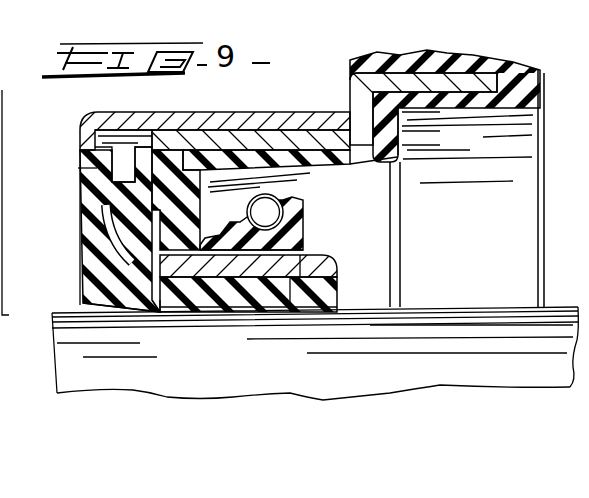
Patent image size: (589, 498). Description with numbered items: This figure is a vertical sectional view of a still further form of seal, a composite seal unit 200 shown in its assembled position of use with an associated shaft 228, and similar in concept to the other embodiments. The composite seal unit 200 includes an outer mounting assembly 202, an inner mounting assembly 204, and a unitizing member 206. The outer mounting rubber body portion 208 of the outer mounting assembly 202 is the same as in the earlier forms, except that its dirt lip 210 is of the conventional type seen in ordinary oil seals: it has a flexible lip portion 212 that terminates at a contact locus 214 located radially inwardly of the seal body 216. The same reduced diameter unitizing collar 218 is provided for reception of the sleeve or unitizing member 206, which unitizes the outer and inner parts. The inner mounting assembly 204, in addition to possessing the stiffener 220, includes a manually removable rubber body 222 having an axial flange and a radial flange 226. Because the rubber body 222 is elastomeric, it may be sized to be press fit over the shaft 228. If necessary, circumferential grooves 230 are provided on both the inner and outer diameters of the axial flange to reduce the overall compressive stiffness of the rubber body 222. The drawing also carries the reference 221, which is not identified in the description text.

The composite seal unit 200 is at (308, 100).
The outer mounting assembly 202 is at (478, 50).
The inner mounting assembly 204 is at (380, 265).
The unitizing member 206 is at (118, 112).
The outer mounting rubber body portion 208 is at (386, 134).
The dirt lip 210 is at (147, 233).
The flexible lip portion 212 is at (156, 306).
The contact locus 214 is at (157, 311).
The seal body 216 is at (203, 234).
The reduced diameter unitizing collar 218 is at (303, 142).
The stiffener 220 is at (301, 258).
The lip edge 221 is at (290, 258).
The manually removable rubber body 222 is at (68, 300).
The radial flange 226 is at (83, 200).
The shaft 228 is at (450, 340).
The circumferential grooves 230 is at (185, 310).